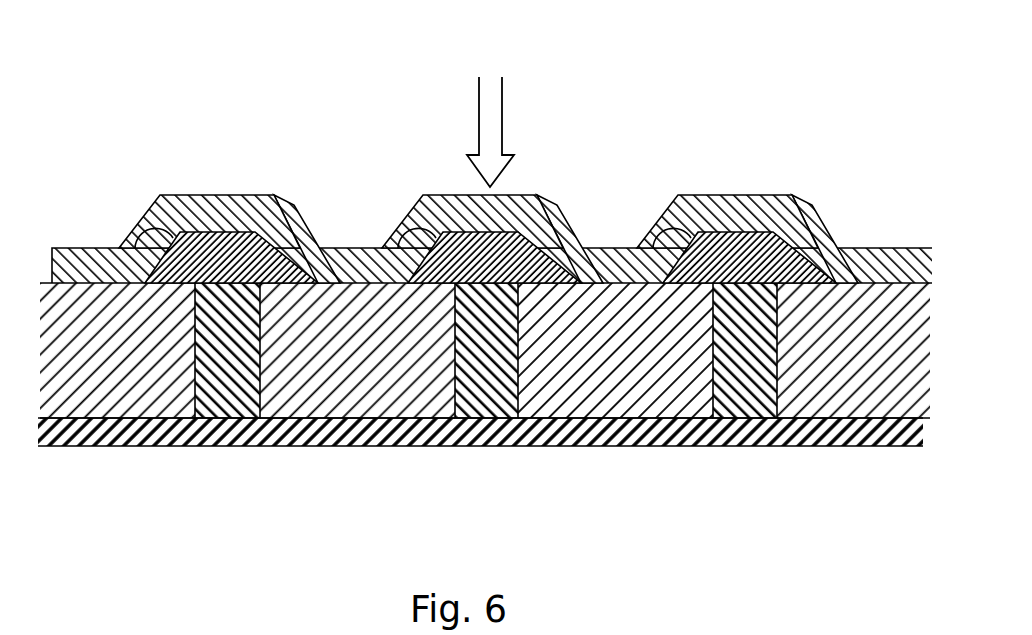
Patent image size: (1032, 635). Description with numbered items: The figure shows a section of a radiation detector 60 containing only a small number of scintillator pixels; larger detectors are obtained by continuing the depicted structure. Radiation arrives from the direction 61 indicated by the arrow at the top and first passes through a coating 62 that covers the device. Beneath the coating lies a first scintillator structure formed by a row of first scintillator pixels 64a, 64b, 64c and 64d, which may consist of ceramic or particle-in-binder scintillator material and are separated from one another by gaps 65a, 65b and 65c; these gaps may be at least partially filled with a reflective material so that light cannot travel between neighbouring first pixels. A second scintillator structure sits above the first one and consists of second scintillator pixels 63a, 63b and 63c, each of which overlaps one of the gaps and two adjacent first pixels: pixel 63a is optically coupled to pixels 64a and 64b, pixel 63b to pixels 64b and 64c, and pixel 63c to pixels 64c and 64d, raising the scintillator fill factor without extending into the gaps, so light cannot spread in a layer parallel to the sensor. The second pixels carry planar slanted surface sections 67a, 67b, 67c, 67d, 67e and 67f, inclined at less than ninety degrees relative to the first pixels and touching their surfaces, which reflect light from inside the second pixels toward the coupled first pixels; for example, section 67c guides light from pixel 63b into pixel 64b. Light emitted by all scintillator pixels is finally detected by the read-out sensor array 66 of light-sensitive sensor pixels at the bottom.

The radiation detector 60 is at (163, 126).
The direction 61 is at (507, 115).
The coating 62 is at (83, 262).
The second scintillator pixel 63a is at (248, 241).
The second scintillator pixel 63b is at (525, 243).
The second scintillator pixel 63c is at (774, 241).
The first scintillator pixel 64a is at (107, 388).
The first scintillator pixel 64b is at (370, 393).
The first scintillator pixel 64c is at (637, 390).
The first scintillator pixel 64d is at (863, 393).
The gap 65a is at (242, 412).
The gap 65b is at (493, 408).
The gap 65c is at (745, 413).
The read-out sensor array 66 is at (150, 439).
The slanted surface section 67a is at (125, 246).
The slanted surface section 67b is at (322, 240).
The slanted surface section 67c is at (395, 233).
The slanted surface section 67d is at (582, 245).
The slanted surface section 67e is at (665, 228).
The slanted surface section 67f is at (835, 243).